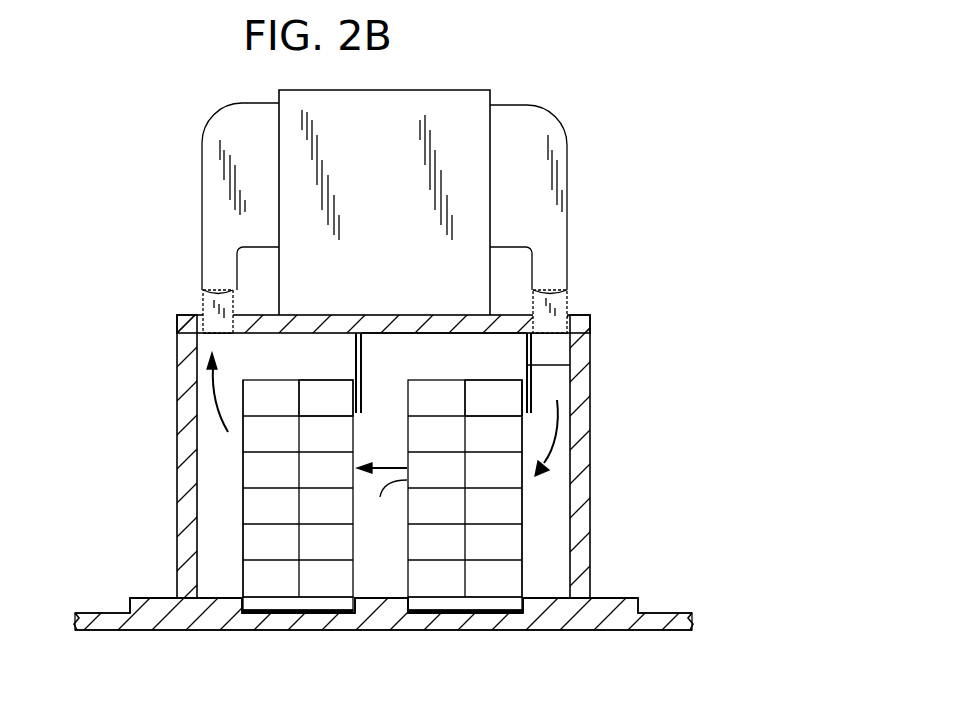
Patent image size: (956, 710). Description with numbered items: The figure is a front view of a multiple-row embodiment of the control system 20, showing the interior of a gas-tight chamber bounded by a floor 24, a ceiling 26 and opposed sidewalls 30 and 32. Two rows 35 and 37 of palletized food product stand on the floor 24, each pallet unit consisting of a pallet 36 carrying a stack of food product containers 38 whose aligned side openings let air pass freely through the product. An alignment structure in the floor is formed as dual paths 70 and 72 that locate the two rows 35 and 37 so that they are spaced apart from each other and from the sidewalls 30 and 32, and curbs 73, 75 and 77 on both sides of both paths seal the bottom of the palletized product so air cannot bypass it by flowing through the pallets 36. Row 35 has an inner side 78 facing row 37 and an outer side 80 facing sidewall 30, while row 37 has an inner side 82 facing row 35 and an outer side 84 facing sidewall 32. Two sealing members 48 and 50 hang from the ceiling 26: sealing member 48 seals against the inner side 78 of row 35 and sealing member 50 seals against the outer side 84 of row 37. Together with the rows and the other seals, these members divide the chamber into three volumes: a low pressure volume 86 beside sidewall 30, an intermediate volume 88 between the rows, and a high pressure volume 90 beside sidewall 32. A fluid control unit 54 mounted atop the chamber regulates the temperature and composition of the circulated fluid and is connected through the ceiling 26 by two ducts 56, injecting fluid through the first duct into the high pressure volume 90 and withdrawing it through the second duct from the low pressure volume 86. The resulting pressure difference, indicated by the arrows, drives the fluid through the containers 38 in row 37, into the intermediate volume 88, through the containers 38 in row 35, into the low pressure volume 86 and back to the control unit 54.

The control system 20 is at (353, 403).
The floor 24 is at (585, 630).
The ceiling 26 is at (503, 312).
The sidewall 30 is at (177, 408).
The sidewall 32 is at (590, 400).
The row 35 is at (313, 380).
The pallet 36 is at (275, 606).
The row 37 is at (437, 380).
The food product containers 38 is at (340, 410).
The sealing member 48 is at (363, 357).
The sealing member 50 is at (528, 364).
The fluid control unit 54 is at (438, 90).
The ducts 56 is at (202, 190).
The path 70 is at (242, 613).
The path 72 is at (410, 615).
The curb 73 is at (220, 597).
The curb 75 is at (368, 598).
The curb 77 is at (553, 597).
The inner side 78 is at (358, 465).
The outer side 80 is at (245, 460).
The inner side 82 is at (382, 507).
The outer side 84 is at (523, 538).
The low pressure volume 86 is at (262, 368).
The intermediate volume 88 is at (410, 372).
The high pressure volume 90 is at (560, 508).